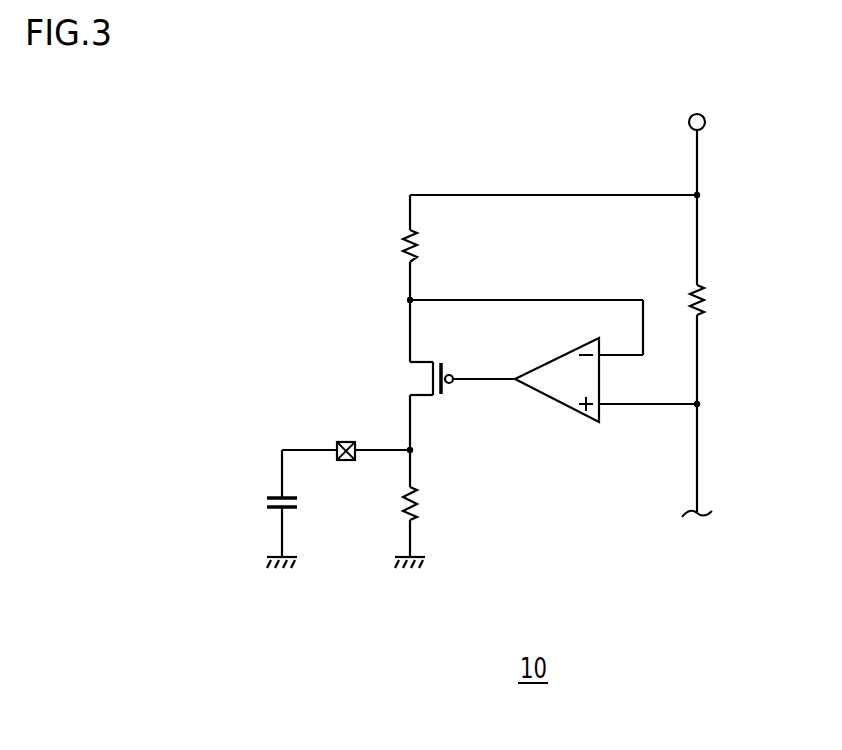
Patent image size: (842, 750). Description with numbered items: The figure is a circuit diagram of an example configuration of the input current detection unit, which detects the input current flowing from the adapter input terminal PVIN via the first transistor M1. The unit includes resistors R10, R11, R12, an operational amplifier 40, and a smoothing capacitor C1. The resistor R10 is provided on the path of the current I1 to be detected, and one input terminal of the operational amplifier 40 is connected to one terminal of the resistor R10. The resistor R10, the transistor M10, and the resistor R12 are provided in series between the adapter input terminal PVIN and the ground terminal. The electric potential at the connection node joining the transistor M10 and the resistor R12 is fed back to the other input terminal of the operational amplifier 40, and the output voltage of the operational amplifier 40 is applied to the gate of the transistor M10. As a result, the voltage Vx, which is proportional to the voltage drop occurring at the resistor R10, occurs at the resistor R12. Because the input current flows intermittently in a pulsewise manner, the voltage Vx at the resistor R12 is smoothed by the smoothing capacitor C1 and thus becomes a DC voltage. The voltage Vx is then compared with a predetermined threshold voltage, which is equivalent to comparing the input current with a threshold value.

The adapter input terminal PVIN is at (704, 115).
The current to be detected I1 is at (714, 215).
The resistor R10 is at (721, 301).
The resistor R11 is at (433, 248).
The resistor R12 is at (433, 506).
The transistor M10 is at (417, 378).
The operational amplifier 40 is at (556, 356).
The voltage Vx is at (434, 448).
The smoothing capacitor C1 is at (337, 442).
The first transistor M1 is at (696, 536).